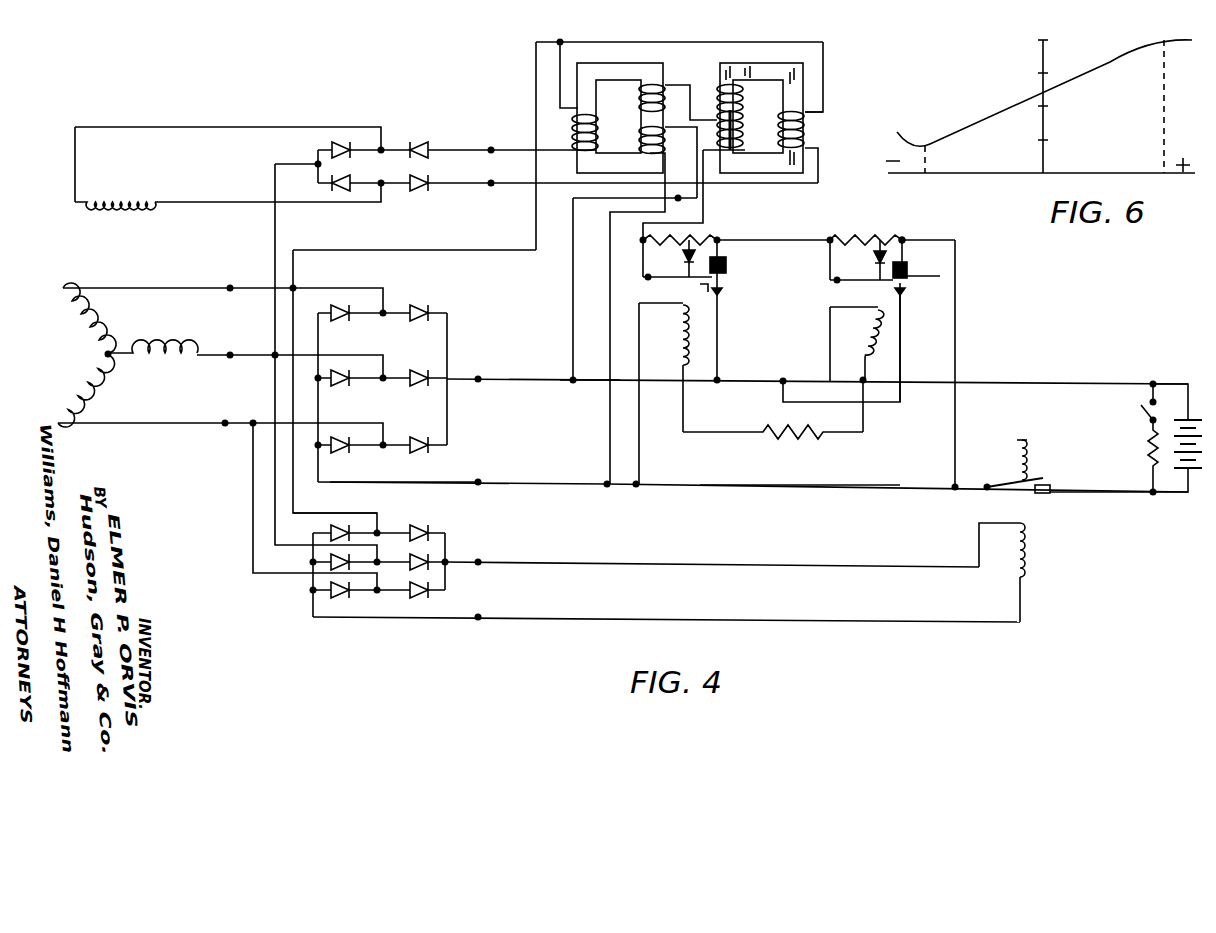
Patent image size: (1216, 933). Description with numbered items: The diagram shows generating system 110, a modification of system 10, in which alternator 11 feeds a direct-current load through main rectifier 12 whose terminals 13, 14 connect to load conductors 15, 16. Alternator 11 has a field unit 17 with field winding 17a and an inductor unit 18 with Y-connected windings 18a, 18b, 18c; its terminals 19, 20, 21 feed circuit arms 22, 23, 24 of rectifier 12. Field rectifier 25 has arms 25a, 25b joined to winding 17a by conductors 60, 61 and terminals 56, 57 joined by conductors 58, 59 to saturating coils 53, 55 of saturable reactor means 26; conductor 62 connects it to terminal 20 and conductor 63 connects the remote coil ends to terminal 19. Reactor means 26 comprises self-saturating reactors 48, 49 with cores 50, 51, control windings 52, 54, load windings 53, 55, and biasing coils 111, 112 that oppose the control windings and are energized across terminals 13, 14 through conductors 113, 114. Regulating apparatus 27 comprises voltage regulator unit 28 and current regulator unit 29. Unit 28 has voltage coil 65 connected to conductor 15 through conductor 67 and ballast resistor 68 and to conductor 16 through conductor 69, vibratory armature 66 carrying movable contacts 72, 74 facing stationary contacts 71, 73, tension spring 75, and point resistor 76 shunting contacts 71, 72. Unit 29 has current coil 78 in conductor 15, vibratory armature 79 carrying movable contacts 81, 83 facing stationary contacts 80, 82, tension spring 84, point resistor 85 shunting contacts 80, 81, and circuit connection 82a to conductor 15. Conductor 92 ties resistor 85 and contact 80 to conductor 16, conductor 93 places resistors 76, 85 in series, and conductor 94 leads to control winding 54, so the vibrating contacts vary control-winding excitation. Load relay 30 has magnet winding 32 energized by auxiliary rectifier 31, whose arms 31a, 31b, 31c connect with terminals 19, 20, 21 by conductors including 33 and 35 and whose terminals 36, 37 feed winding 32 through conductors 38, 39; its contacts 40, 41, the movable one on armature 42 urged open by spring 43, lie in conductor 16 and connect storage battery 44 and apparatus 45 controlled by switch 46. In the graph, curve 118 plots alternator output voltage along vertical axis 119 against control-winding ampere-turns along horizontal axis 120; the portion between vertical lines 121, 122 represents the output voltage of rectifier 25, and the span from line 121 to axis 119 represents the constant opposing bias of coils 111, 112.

In FIG. 4, the electrical generating system 10 is at (463, 484).
In FIG. 4, the alternating current generator 11 is at (148, 289).
In FIG. 4, the main rectifier 12 is at (381, 385).
In FIG. 4, the direct current terminal 13 is at (480, 378).
In FIG. 4, the direct current terminal 14 is at (484, 476).
In FIG. 4, the load conductor 15 is at (597, 380).
In FIG. 4, the load conductor 16 is at (581, 466).
In FIG. 4, the field unit 17 is at (115, 199).
In FIG. 4, the field winding 17a is at (110, 206).
In FIG. 4, the inductor unit 18 is at (131, 355).
In FIG. 4, the inductor winding 18a is at (102, 331).
In FIG. 4, the inductor winding 18b is at (170, 360).
In FIG. 4, the inductor winding 18c is at (93, 392).
In FIG. 4, the alternating current terminal 19 is at (236, 282).
In FIG. 4, the alternating current terminal 20 is at (232, 355).
In FIG. 4, the alternating current terminal 21 is at (228, 423).
In FIG. 4, the circuit arm 22 is at (399, 313).
In FIG. 4, the circuit arm 23 is at (404, 376).
In FIG. 4, the circuit arm 24 is at (404, 444).
In FIG. 4, the field rectifier 25 is at (403, 169).
In FIG. 4, the circuit arm 25a is at (370, 146).
In FIG. 4, the circuit arm 25b is at (372, 194).
In FIG. 4, the saturable reactor means 26 is at (679, 133).
In FIG. 4, the regulating apparatus 27 is at (814, 351).
In FIG. 4, the voltage regulator unit 28 is at (703, 305).
In FIG. 4, the current regulator unit 29 is at (883, 302).
In FIG. 4, the load relay 30 is at (1025, 565).
In FIG. 4, the second auxiliary rectifier 31 is at (379, 565).
In FIG. 4, the circuit arm 31a is at (392, 538).
In FIG. 4, the circuit arm 31b is at (400, 556).
In FIG. 4, the circuit arm 31c is at (406, 612).
In FIG. 4, the magnet winding 32 is at (1030, 550).
In FIG. 4, the conductor 33 is at (293, 505).
In FIG. 4, the conductor 35 is at (253, 505).
In FIG. 4, the direct current terminal 36 is at (478, 561).
In FIG. 4, the direct current terminal 37 is at (478, 616).
In FIG. 4, the conductor 38 is at (714, 550).
In FIG. 4, the conductor 39 is at (714, 605).
In FIG. 4, the stationary switch contact 40 is at (1033, 492).
In FIG. 4, the movable switch contact 41 is at (1050, 484).
In FIG. 4, the armature 42 is at (1030, 470).
In FIG. 4, the spring 43 is at (1022, 438).
In FIG. 4, the storage battery 44 is at (1190, 492).
In FIG. 4, the electrical apparatus 45 is at (1148, 456).
In FIG. 4, the switch 46 is at (1138, 411).
In FIG. 4, the self-saturating reactor 48 is at (628, 121).
In FIG. 4, the self-saturating reactor 49 is at (771, 121).
In FIG. 4, the magnetic core 50 is at (611, 62).
In FIG. 4, the magnetic core 51 is at (774, 66).
In FIG. 4, the control winding 52 is at (668, 90).
In FIG. 4, the main load winding 53 is at (568, 126).
In FIG. 4, the control winding 54 is at (737, 100).
In FIG. 4, the main load winding 55 is at (808, 128).
In FIG. 4, the terminal 56 is at (490, 148).
In FIG. 4, the terminal 57 is at (483, 188).
In FIG. 4, the conductor 58 is at (531, 137).
In FIG. 4, the conductor 59 is at (501, 186).
In FIG. 4, the conductor 60 is at (249, 108).
In FIG. 4, the conductor 61 is at (240, 188).
In FIG. 4, the conductor 62 is at (275, 233).
In FIG. 4, the conductor 63 is at (468, 236).
In FIG. 4, the voltage magnet coil 65 is at (678, 348).
In FIG. 4, the vibratory armature 66 is at (674, 280).
In FIG. 4, the conductor 67 is at (854, 430).
In FIG. 4, the ballast resistor 68 is at (772, 430).
In FIG. 4, the conductor 69 is at (639, 400).
In FIG. 4, the upper stationary contact 71 is at (725, 263).
In FIG. 4, the upper movable contact 72 is at (726, 269).
In FIG. 4, the lower stationary contact 73 is at (725, 293).
In FIG. 4, the lower movable contact 74 is at (726, 277).
In FIG. 4, the tension spring 75 is at (682, 259).
In FIG. 4, the point resistor 76 is at (704, 239).
In FIG. 4, the current magnet coil 78 is at (861, 341).
In FIG. 4, the vibratory armature 79 is at (832, 283).
In FIG. 4, the upper stationary contact 80 is at (906, 240).
In FIG. 4, the upper movable contact 81 is at (907, 272).
In FIG. 4, the lower stationary contact 82 is at (907, 285).
In FIG. 4, the circuit connection 82a is at (925, 336).
In FIG. 4, the lower movable contact 83 is at (907, 277).
In FIG. 4, the tension spring 84 is at (877, 258).
In FIG. 4, the point resistor 85 is at (876, 238).
In FIG. 4, the conductor 92 is at (958, 330).
In FIG. 4, the conductor 93 is at (830, 233).
In FIG. 4, the conductor 94 is at (700, 200).
In FIG. 4, the generating system 110 is at (790, 484).
In FIG. 4, the biasing coil 111 is at (648, 158).
In FIG. 4, the biasing coil 112 is at (738, 160).
In FIG. 4, the conductor 113 is at (572, 295).
In FIG. 4, the conductor 114 is at (610, 338).
In FIG. 6, the curve 118 is at (1080, 74).
In FIG. 6, the vertical axis 119 is at (1045, 56).
In FIG. 6, the horizontal axis 120 is at (1072, 170).
In FIG. 6, the vertical line 121 is at (928, 157).
In FIG. 6, the vertical line 122 is at (1166, 80).